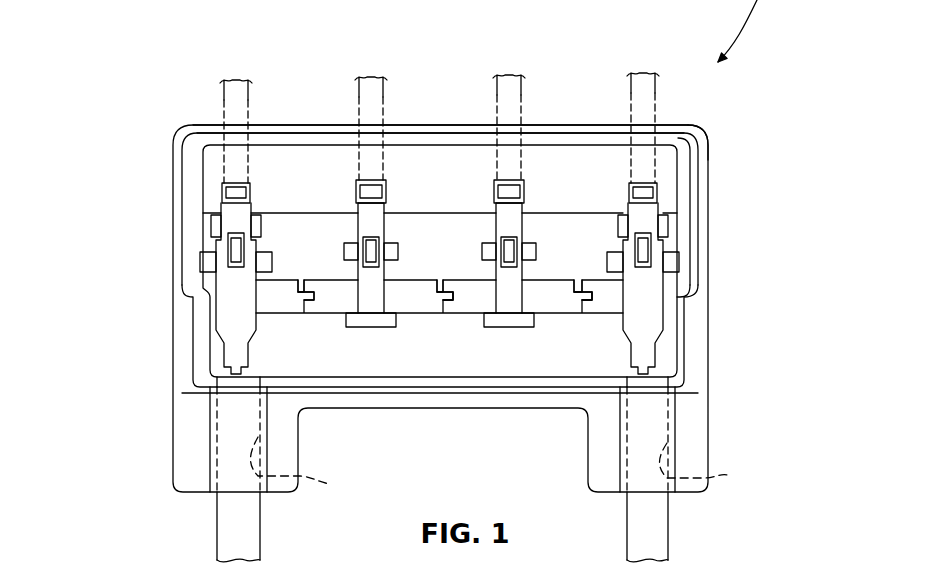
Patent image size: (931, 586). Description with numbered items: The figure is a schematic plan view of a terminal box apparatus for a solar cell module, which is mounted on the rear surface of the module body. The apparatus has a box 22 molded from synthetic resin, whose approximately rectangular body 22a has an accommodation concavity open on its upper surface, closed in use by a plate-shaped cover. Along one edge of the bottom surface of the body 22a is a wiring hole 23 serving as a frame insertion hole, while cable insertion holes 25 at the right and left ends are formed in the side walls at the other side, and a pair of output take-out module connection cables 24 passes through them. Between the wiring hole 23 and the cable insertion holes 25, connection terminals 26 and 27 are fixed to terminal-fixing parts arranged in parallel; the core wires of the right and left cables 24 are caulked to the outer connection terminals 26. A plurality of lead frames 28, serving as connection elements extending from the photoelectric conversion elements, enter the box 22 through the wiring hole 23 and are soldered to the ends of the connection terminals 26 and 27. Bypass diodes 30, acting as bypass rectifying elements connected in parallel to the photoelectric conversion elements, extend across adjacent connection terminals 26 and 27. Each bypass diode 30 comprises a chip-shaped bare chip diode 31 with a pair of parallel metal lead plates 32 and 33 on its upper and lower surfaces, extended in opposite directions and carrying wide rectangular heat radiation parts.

The box 22 is at (717, 337).
The body 22a is at (706, 158).
The wiring hole 23 is at (420, 155).
The module connection cable 24 is at (252, 548).
The cable insertion hole 25 is at (508, 466).
The connection terminal 26 is at (228, 320).
The connection terminal 27 is at (381, 226).
The lead frame 28 is at (249, 112).
The bypass diode 30 is at (301, 281).
The bare chip diode 31 is at (441, 313).
The upper lead plate 32 is at (422, 307).
The lower lead plate 33 is at (590, 319).